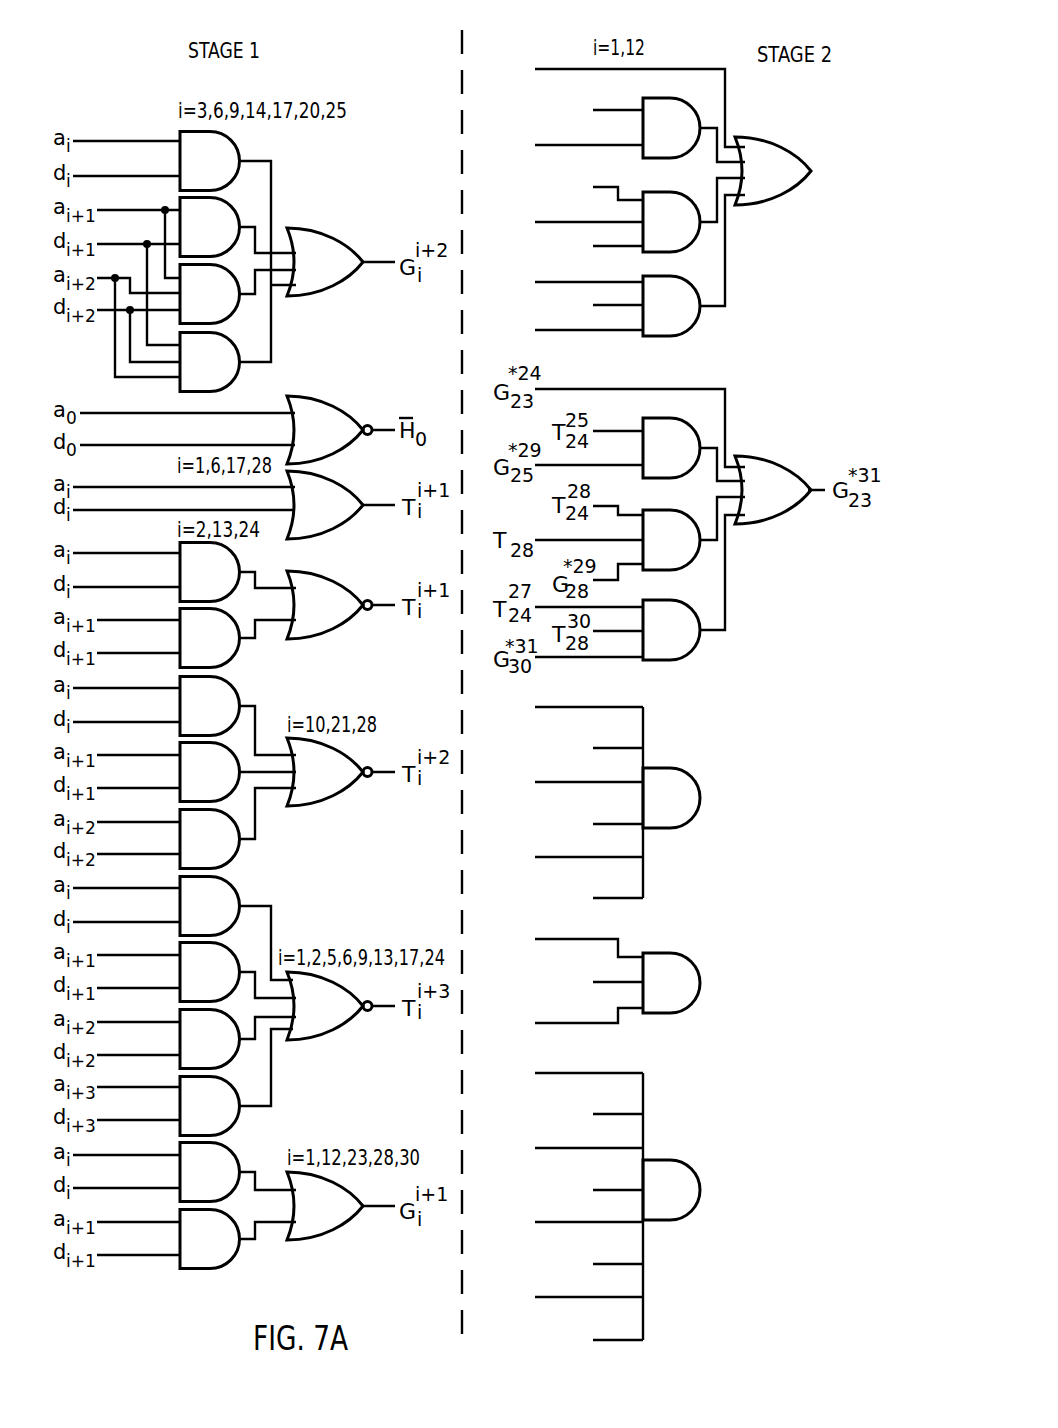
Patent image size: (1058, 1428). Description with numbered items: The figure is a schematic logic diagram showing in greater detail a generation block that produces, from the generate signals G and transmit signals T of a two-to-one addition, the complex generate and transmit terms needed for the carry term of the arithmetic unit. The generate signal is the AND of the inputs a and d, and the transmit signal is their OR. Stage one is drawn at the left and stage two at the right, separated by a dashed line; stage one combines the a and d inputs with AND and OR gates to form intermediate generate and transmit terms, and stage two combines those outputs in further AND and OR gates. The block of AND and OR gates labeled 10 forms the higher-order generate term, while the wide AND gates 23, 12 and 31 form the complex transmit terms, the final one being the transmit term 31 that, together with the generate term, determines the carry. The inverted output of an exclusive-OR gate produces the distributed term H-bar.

The stage 2 generate logic block G*i+ 10 is at (808, 171).
The transmit AND gate T23 23 is at (700, 798).
The transmit AND gate T12 12 is at (700, 983).
The transmit AND gate T31 31 is at (700, 1190).